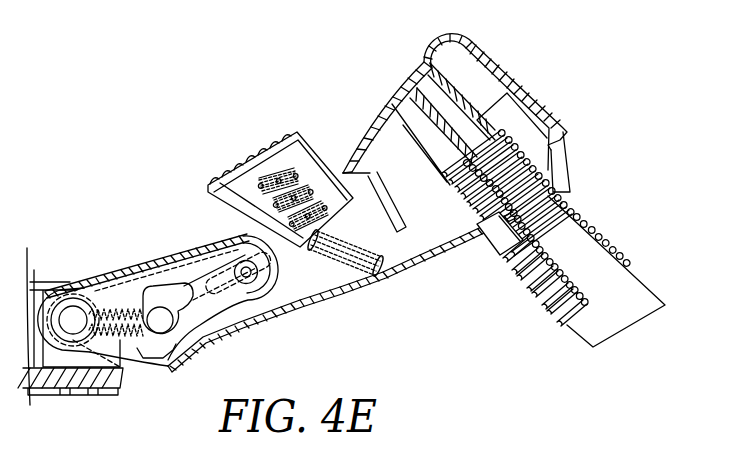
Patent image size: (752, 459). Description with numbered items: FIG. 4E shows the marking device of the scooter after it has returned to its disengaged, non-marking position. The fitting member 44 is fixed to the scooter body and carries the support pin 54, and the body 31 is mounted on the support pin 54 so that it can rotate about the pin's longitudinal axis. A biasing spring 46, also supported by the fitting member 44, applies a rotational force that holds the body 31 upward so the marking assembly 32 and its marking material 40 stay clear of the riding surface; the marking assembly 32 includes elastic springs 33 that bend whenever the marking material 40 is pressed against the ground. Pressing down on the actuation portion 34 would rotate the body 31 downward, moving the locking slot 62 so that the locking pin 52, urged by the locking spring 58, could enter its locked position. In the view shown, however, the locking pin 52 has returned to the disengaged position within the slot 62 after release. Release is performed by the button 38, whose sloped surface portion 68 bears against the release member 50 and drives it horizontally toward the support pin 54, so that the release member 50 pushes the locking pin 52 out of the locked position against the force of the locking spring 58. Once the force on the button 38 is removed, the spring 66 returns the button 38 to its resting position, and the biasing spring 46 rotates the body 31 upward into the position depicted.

The body 31 is at (421, 258).
The marking assembly 32 is at (520, 310).
The springs 33 is at (594, 227).
The actuation portion 34 is at (407, 82).
The button 38 is at (312, 150).
The marking material 40 is at (645, 283).
The fitting member 44 is at (52, 390).
The biasing spring 46 is at (70, 300).
The release member 50 is at (249, 240).
The locking pin 52 is at (160, 323).
The support pin 54 is at (76, 318).
The locking spring 58 is at (113, 345).
The locking slot 62 is at (163, 300).
The spring 66 is at (380, 262).
The sloped surface portion 68 is at (283, 236).